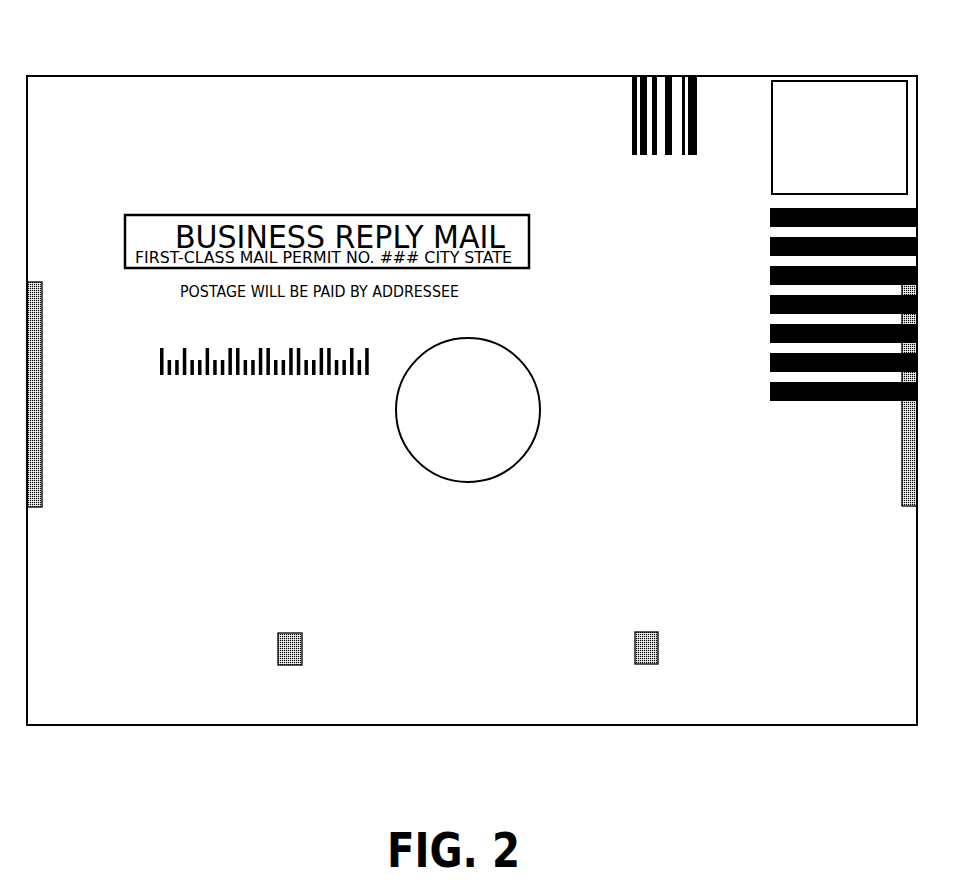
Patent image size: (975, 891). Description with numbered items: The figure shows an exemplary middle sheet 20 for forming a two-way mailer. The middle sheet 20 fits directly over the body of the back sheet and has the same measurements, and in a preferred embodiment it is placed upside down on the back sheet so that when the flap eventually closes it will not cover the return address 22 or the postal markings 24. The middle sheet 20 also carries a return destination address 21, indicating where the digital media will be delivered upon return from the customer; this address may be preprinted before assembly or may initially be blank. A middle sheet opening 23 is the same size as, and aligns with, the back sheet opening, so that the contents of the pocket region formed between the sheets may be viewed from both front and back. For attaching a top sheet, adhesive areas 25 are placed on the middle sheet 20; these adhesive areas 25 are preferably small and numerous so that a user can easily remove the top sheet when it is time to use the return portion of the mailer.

The middle sheet 20 is at (472, 107).
The return destination address 21 is at (152, 340).
The return address 22 is at (288, 85).
The middle sheet opening 23 is at (540, 404).
The postal markings 24 is at (833, 90).
The adhesive areas 25 is at (38, 467).